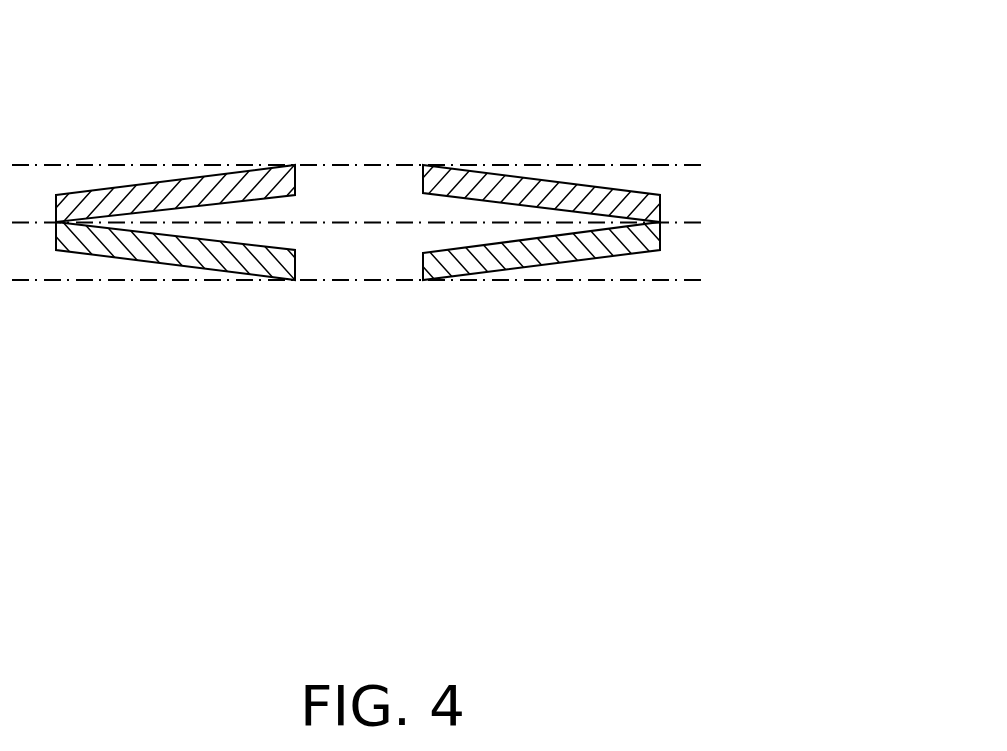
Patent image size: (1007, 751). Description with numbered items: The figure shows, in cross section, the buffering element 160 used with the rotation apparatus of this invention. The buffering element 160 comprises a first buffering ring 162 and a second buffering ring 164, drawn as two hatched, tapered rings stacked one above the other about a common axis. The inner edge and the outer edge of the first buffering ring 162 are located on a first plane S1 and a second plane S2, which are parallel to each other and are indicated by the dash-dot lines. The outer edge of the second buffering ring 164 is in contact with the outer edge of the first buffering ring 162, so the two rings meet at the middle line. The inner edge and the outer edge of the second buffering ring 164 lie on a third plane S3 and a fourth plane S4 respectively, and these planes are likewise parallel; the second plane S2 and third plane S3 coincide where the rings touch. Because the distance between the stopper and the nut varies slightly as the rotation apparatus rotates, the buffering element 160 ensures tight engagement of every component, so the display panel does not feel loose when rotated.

The buffering element 160 is at (394, 208).
The first buffering ring 162 is at (272, 183).
The second buffering ring 164 is at (272, 262).
The first plane S1 is at (382, 165).
The second plane S2 is at (412, 224).
The third plane S3 is at (412, 224).
The fourth plane S4 is at (382, 280).